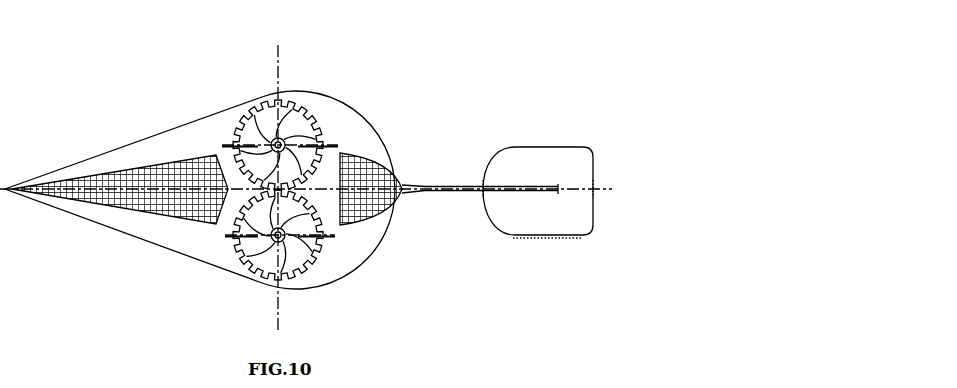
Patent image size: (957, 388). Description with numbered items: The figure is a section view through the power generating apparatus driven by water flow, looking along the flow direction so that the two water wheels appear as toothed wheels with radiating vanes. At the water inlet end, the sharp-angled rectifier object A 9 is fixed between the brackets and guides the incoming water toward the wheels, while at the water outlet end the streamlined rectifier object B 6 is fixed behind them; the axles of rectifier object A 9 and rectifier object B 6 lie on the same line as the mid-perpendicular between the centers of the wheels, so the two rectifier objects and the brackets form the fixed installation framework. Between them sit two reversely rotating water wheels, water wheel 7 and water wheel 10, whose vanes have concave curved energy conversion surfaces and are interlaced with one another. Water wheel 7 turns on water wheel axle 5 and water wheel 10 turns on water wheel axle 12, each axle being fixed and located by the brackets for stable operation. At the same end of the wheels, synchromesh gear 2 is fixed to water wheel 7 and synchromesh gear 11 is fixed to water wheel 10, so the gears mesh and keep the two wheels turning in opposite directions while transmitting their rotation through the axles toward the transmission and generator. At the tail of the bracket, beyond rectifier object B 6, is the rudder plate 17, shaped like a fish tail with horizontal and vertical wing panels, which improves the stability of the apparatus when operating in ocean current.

The rectifier object A 9 is at (195, 167).
The synchromesh gear 11 is at (263, 97).
The water wheel axle 12 is at (295, 100).
The water wheel 10 is at (322, 133).
The rectifier object B 6 is at (382, 165).
The rudder plate 17 is at (553, 167).
The synchromesh gear 2 is at (242, 233).
The water wheel axle 5 is at (250, 256).
The water wheel 7 is at (317, 248).